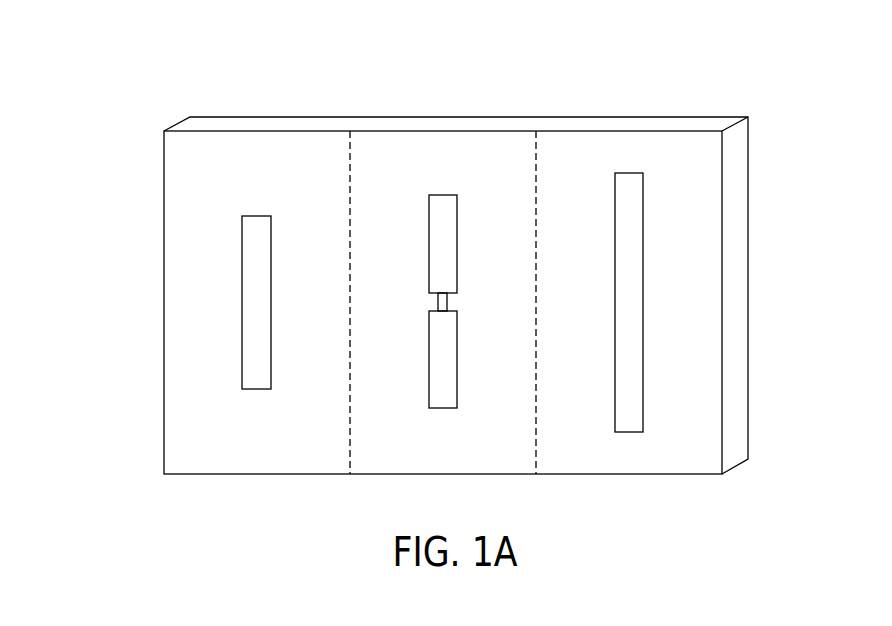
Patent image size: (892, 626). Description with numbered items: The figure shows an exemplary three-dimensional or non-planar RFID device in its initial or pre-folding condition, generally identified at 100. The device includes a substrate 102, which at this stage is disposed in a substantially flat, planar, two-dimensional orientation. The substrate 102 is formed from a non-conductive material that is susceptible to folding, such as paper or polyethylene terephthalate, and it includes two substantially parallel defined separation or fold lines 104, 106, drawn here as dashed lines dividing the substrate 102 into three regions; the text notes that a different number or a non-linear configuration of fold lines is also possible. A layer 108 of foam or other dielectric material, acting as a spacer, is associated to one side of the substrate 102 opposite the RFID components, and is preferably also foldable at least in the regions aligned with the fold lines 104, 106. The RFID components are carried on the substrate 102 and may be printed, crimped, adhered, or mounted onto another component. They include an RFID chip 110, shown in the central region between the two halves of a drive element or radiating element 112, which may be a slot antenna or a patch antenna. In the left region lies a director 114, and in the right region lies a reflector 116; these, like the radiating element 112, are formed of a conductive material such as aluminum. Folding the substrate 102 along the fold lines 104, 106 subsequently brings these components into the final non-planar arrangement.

The RFID device in initial or pre-folding condition 100 is at (135, 100).
The substrate 102 is at (164, 272).
The fold line 104 is at (348, 150).
The fold line 106 is at (535, 150).
The layer of foam or other dielectric material 108 is at (738, 277).
The RFID chip 110 is at (447, 305).
The drive element or radiating element 112 is at (457, 245).
The director 114 is at (271, 263).
The reflector 116 is at (643, 220).